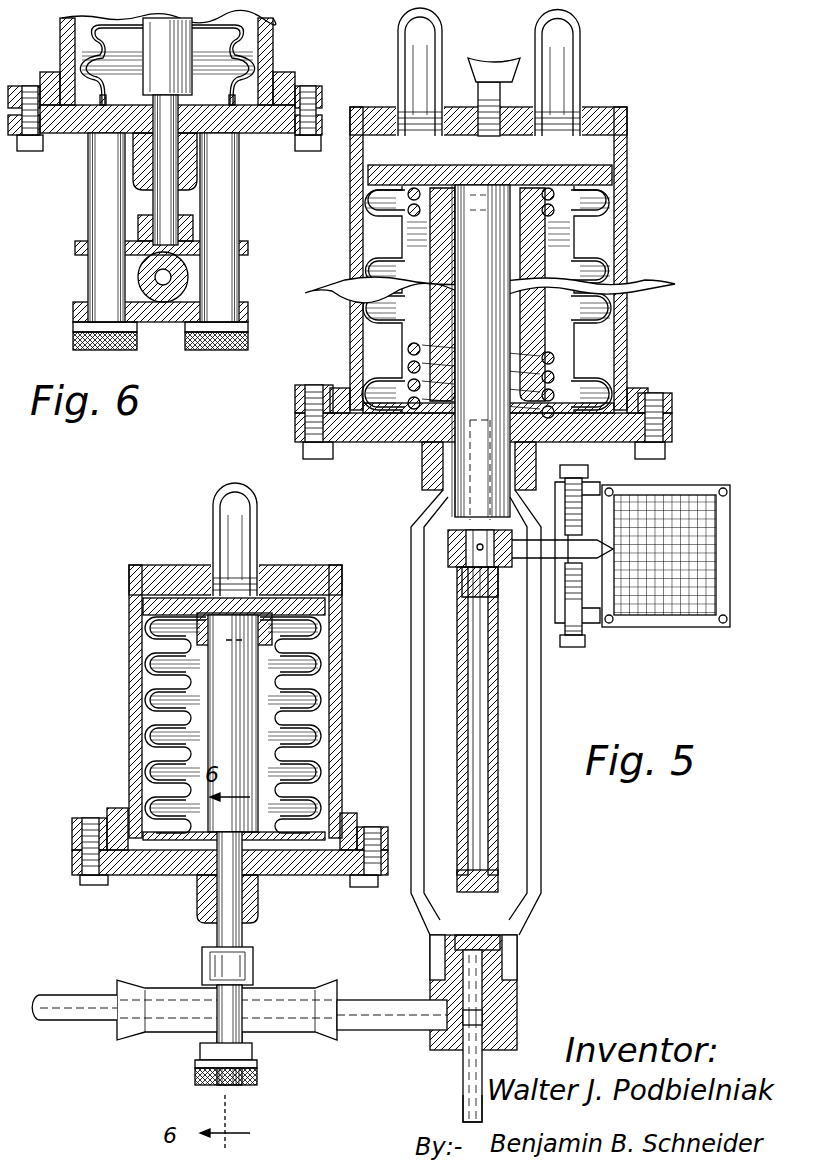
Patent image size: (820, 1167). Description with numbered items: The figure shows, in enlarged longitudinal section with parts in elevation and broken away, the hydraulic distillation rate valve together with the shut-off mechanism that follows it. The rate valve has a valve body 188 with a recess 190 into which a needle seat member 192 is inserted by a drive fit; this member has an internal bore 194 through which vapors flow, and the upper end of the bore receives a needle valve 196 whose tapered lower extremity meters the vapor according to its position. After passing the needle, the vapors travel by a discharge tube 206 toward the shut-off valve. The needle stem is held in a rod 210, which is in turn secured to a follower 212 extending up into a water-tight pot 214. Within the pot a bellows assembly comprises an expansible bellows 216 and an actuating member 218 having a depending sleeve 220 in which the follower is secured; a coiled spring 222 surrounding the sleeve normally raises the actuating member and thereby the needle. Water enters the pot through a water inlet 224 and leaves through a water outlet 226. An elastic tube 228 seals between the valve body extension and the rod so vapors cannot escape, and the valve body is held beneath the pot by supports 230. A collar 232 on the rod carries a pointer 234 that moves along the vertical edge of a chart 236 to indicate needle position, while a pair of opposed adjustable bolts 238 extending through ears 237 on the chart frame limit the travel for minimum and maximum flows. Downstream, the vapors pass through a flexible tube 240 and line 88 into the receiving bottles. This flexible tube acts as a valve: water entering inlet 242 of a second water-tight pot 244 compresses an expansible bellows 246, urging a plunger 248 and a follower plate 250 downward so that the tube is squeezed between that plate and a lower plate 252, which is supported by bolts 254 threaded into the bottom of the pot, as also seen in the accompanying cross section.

In FIG. 5, the line 88 is at (62, 1012).
In FIG. 5, the valve body 188 is at (517, 990).
In FIG. 5, the recess 190 is at (485, 1020).
In FIG. 5, the needle seat member 192 is at (463, 1065).
In FIG. 5, the internal bore 194 is at (465, 1105).
In FIG. 5, the needle valve 196 is at (500, 946).
In FIG. 5, the discharge tube 206 is at (380, 1008).
In FIG. 5, the rod 210 is at (447, 522).
In FIG. 5, the follower 212 is at (418, 445).
In FIG. 5, the pot 214 is at (627, 240).
In FIG. 5, the expansible bellows 216 is at (605, 208).
In FIG. 5, the actuating member 218 is at (612, 174).
In FIG. 5, the sleeve 220 is at (612, 285).
In FIG. 5, the coiled spring 222 is at (560, 358).
In FIG. 5, the water inlet 224 is at (412, 95).
In FIG. 5, the water outlet 226 is at (568, 88).
In FIG. 5, the tube 228 is at (498, 712).
In FIG. 5, the supports 230 is at (412, 738).
In FIG. 5, the collar 232 is at (448, 555).
In FIG. 5, the pointer 234 is at (600, 538).
In FIG. 5, the chart 236 is at (590, 472).
In FIG. 5, the ears 237 is at (563, 623).
In FIG. 5, the adjustable bolts 238 is at (680, 495).
In FIG. 6, the flexible tube 240 is at (138, 274).
In FIG. 5, the flexible tube 240 is at (270, 998).
In FIG. 5, the inlet 242 is at (222, 530).
In FIG. 5, the pot 244 is at (128, 678).
In FIG. 5, the expansible bellows 246 is at (318, 672).
In FIG. 5, the plunger 248 is at (222, 728).
In FIG. 6, the follower plate 250 is at (82, 242).
In FIG. 6, the lower plate 252 is at (240, 308).
In FIG. 6, the bolts 254 is at (193, 352).